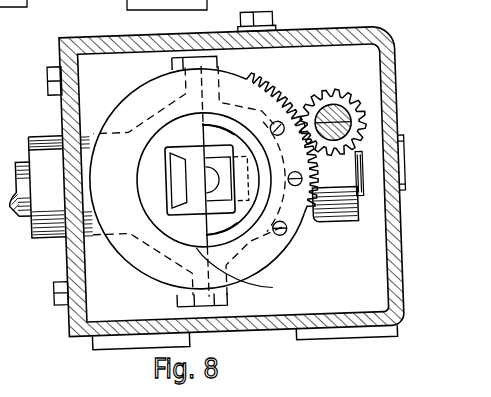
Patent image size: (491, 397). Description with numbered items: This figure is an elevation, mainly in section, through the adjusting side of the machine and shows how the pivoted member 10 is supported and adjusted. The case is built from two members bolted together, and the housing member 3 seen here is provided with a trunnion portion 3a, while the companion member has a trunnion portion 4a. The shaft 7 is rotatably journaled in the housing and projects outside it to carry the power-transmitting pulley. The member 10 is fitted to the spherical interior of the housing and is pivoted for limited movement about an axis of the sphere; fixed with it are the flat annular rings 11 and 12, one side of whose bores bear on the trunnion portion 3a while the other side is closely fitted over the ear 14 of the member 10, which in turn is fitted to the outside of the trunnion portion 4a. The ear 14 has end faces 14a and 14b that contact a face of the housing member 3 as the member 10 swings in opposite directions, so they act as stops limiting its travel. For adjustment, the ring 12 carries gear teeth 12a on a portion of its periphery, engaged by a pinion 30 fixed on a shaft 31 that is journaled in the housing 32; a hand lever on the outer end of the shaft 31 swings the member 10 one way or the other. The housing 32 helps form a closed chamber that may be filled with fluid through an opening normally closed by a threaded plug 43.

The housing member 3 is at (143, 243).
The trunnion portion 3a is at (171, 232).
The trunnion portion 4a is at (224, 231).
The shaft 7 is at (17, 211).
The pivoted member 10 is at (343, 228).
The annular ring 11 is at (217, 208).
The annular ring 12 is at (296, 241).
The gear teeth 12a is at (311, 195).
The ear 14 is at (247, 222).
The end face of ear 14a is at (221, 226).
The end face of ear 14b is at (229, 130).
The pinion 30 is at (337, 94).
The shaft 31 is at (343, 103).
The housing 32 is at (320, 33).
The threaded plug 43 is at (274, 22).